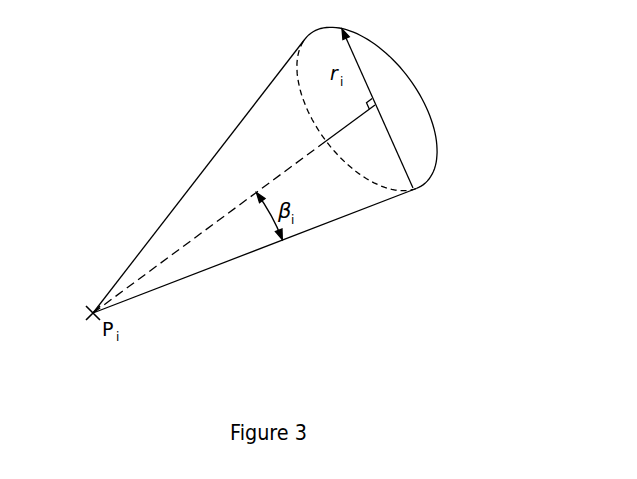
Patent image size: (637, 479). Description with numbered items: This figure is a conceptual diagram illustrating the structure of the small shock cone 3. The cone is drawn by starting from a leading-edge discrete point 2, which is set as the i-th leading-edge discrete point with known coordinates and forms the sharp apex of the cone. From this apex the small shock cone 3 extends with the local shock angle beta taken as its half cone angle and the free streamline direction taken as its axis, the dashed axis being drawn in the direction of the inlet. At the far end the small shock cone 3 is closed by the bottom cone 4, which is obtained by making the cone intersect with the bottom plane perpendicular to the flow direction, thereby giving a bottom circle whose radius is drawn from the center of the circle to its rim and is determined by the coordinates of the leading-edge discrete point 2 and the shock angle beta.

The leading-edge discrete point 2 is at (92, 318).
The small shock cone 3 is at (237, 259).
The bottom cone 4 is at (435, 180).